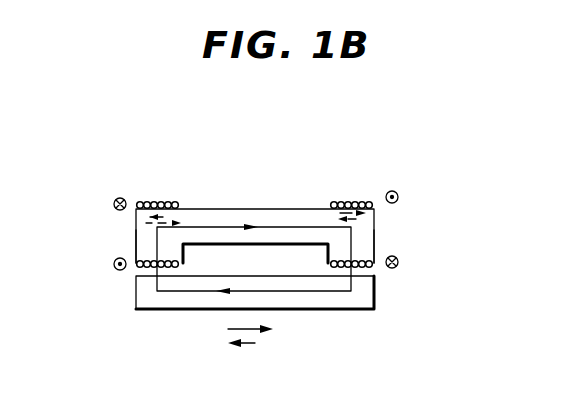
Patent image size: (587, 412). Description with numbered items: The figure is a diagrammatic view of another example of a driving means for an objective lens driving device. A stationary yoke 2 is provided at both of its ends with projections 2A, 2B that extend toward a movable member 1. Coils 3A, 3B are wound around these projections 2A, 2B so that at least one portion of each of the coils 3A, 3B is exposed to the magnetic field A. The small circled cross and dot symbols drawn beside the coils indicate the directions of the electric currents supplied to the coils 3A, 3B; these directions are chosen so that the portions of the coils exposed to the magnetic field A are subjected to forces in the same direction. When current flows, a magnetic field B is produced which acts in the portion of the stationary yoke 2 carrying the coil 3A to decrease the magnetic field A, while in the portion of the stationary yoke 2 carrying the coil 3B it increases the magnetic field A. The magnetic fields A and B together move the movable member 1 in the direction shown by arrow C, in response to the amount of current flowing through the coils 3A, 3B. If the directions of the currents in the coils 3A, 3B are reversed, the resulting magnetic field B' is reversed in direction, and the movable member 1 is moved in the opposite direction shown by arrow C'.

The movable member 1 is at (363, 297).
The stationary yoke 2 is at (218, 218).
The projection 2A is at (142, 244).
The projection 2B is at (362, 252).
The coil 3A is at (156, 202).
The coil 3B is at (347, 202).
The magnetic field A is at (290, 228).
The magnetic field B is at (286, 196).
The magnetic field B' is at (410, 225).
The arrow C is at (273, 329).
The arrow C' is at (252, 366).